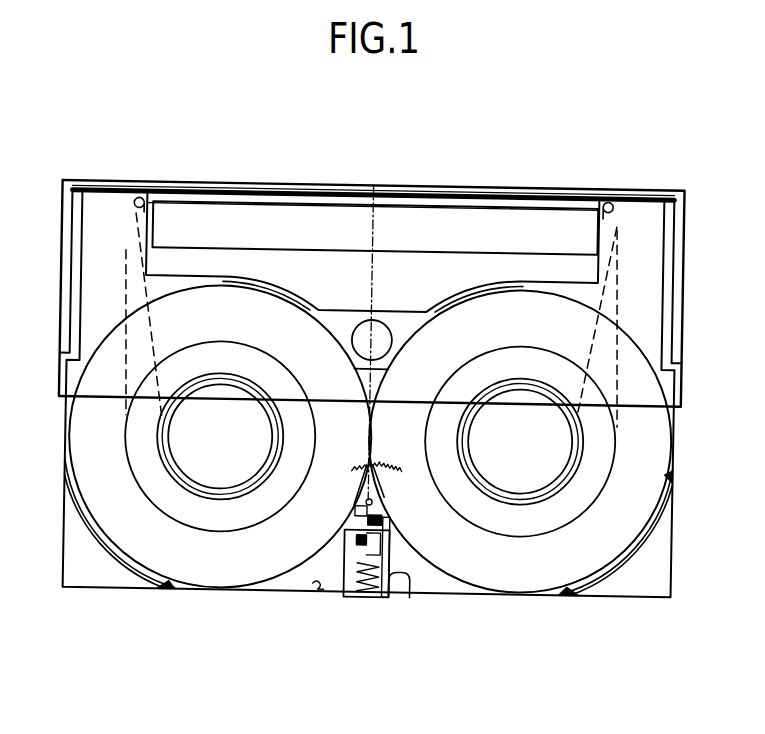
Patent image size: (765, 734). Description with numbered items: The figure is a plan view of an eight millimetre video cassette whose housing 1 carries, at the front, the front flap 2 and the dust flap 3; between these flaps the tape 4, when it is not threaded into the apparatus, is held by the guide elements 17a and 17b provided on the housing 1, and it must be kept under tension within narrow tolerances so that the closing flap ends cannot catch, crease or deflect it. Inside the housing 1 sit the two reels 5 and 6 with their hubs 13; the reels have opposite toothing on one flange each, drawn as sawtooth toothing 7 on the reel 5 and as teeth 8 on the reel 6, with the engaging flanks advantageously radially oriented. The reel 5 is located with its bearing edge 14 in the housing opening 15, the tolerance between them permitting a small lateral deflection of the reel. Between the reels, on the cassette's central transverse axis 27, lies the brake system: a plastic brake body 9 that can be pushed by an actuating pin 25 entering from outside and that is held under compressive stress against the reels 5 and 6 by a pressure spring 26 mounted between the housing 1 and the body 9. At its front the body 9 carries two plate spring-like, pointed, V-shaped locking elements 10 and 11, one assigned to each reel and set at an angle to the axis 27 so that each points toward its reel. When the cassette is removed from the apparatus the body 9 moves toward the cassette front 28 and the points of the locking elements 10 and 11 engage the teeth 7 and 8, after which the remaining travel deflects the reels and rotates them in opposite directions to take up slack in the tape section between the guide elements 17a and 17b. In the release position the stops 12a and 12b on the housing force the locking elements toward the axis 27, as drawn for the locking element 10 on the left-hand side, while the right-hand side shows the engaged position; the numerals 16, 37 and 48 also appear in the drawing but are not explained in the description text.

The housing 1 is at (687, 430).
The front flap 2 is at (681, 257).
The dust flap 3 is at (483, 183).
The tape 4 is at (618, 246).
The reel 5 is at (326, 411).
The reel 6 is at (628, 516).
The sawtooth toothing 7 is at (352, 525).
The teeth 8 is at (392, 503).
The brake body 9 is at (371, 590).
The locking element 10 is at (360, 548).
The locking element 11 is at (394, 505).
The stop 12a is at (381, 470).
The stop 12b is at (389, 488).
The hub 13 is at (188, 491).
The bearing edge 14 is at (160, 490).
The housing opening 15 is at (170, 494).
The guide ridge 16 is at (69, 468).
The guide element 17a is at (137, 204).
The guide element 17b is at (587, 191).
The actuating pin 25 is at (386, 480).
The pressure spring 26 is at (396, 580).
The central transverse axis 27 is at (368, 185).
The cassette front 28 is at (261, 187).
The release button 37 is at (408, 596).
The stop 48 is at (321, 591).